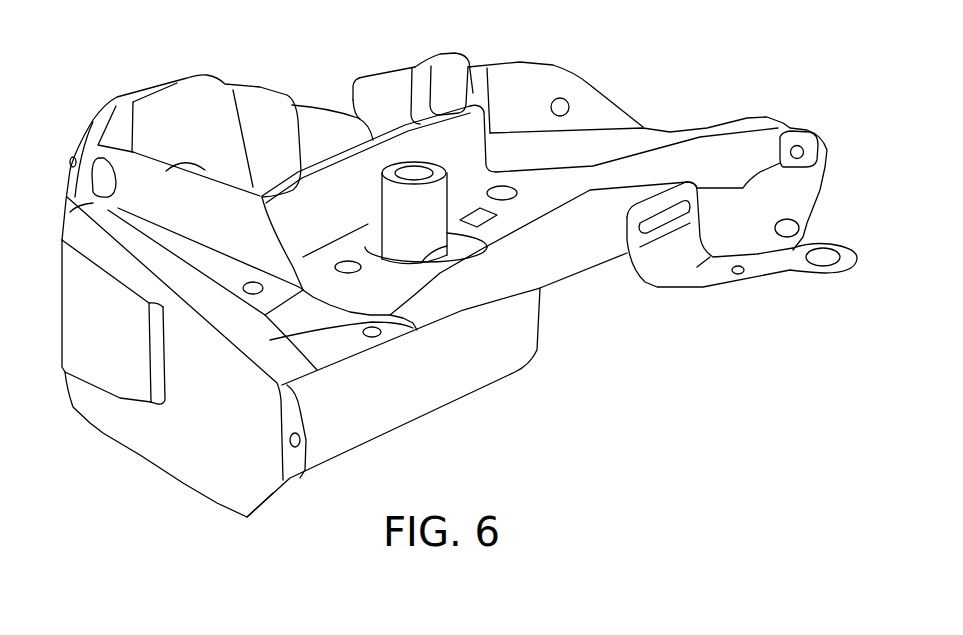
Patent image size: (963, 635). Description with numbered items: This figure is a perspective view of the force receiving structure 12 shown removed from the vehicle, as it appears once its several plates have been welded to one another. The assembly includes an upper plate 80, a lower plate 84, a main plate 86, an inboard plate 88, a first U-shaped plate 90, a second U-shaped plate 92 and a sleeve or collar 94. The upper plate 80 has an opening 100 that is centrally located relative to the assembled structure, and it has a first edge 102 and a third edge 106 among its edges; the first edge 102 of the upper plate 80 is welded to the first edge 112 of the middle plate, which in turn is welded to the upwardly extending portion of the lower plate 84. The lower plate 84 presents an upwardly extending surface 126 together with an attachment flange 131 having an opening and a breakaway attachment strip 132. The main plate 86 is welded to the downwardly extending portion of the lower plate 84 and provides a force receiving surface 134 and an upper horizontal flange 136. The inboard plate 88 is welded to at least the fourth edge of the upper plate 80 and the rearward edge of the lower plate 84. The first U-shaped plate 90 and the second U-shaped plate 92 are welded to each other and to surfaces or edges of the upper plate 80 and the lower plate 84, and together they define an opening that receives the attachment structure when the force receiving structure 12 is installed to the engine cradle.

The force receiving structure 12 is at (660, 36).
The upper plate 80 is at (530, 203).
The lower plate 84 is at (486, 364).
The main plate 86 is at (250, 483).
The inboard plate 88 is at (516, 97).
The first U-shaped plate 90 is at (180, 125).
The second U-shaped plate 92 is at (333, 133).
The sleeve or collar 94 is at (410, 208).
The opening 100 is at (487, 250).
The first edge 102 is at (412, 118).
The third edge 106 is at (577, 167).
The first edge 112 is at (393, 127).
The upwardly extending surface 126 is at (390, 387).
The attachment flange 131 is at (447, 93).
The breakaway attachment strip 132 is at (710, 277).
The force receiving surface 134 is at (192, 415).
The upper horizontal flange 136 is at (337, 298).